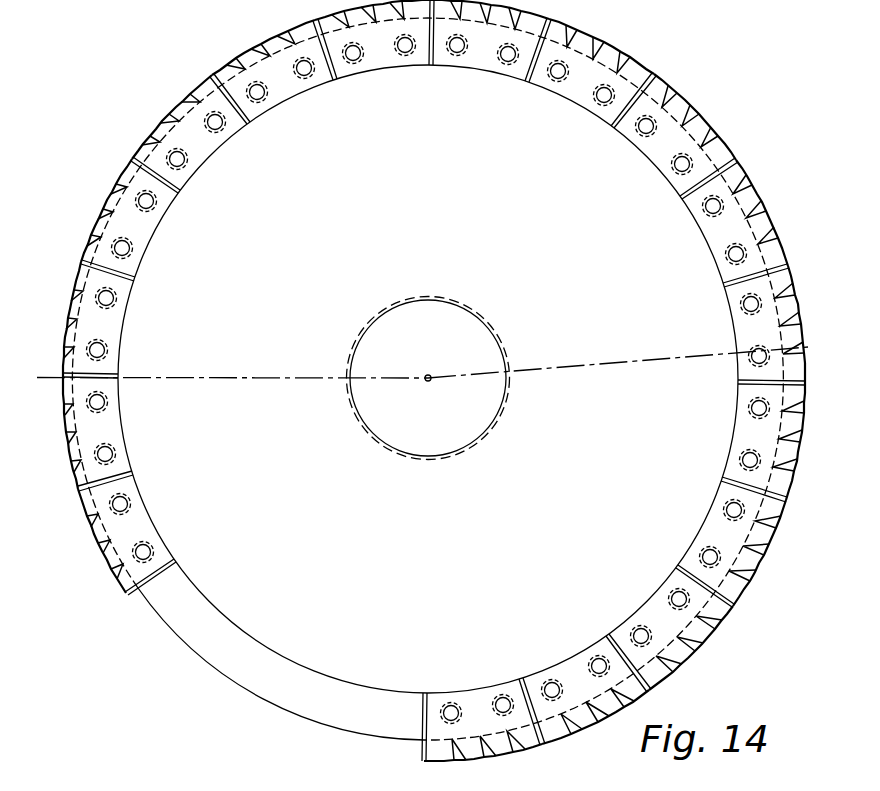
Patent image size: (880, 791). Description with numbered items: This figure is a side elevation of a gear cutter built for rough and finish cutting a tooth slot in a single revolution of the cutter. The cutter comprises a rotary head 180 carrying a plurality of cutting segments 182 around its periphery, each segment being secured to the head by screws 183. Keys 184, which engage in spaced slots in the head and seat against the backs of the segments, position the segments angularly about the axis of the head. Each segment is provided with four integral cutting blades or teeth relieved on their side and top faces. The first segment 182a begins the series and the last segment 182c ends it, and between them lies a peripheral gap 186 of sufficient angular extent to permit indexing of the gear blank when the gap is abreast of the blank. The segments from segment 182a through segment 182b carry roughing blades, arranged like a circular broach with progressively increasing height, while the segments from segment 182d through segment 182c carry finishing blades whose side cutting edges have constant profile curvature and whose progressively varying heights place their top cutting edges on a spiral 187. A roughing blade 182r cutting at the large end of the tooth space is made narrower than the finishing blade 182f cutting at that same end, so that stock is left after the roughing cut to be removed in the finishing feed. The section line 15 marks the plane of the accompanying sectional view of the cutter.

The section line 15- 15 is at (38, 377).
The rotary head 180 is at (428, 379).
The cutting segments 182 is at (285, 93).
The first segment 182a is at (143, 523).
The roughing segment 182b is at (742, 320).
The last segment 182c is at (473, 695).
The finishing segment 182d is at (735, 418).
The finishing blade 182f is at (803, 385).
The roughing blade 182r is at (805, 347).
The screws 183 is at (108, 345).
The keys 184 is at (148, 165).
The peripheral gap 186 is at (267, 706).
The spiral 187 is at (678, 667).